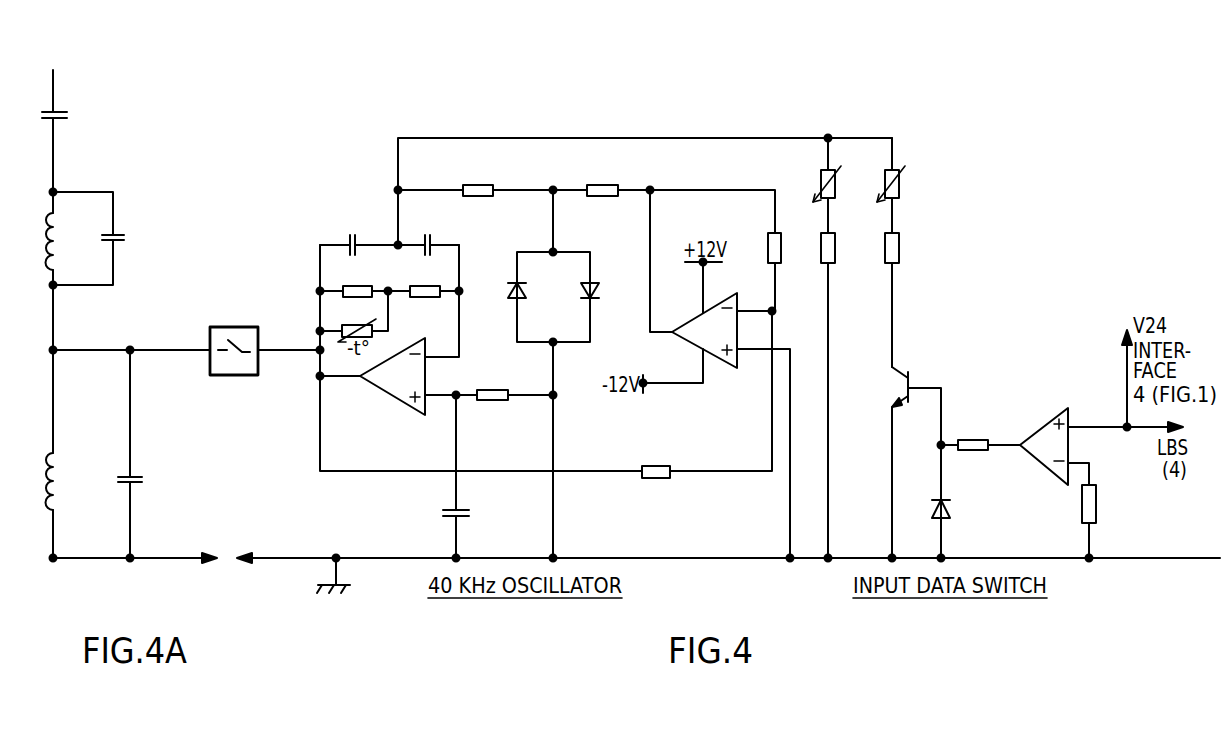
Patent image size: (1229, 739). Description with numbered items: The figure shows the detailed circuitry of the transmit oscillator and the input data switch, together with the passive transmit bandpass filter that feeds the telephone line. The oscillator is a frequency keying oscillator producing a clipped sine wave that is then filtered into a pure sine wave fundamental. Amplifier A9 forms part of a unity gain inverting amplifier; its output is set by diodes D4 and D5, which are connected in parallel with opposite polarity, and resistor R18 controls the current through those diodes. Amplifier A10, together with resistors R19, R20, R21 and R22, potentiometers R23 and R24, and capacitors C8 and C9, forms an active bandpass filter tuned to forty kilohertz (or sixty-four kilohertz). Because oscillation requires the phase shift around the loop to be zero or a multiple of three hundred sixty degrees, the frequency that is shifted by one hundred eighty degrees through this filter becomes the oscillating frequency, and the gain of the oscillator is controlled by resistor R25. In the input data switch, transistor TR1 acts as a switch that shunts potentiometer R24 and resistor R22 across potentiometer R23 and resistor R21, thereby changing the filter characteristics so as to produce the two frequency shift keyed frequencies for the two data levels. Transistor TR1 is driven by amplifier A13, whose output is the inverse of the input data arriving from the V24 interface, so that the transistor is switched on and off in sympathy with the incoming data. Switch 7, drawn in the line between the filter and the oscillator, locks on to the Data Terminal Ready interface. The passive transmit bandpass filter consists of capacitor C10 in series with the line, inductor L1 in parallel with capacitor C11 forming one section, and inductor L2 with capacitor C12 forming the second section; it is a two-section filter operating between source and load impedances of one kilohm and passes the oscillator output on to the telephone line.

In FIG. 4A, the capacitor C10 is at (67, 104).
In FIG. 4A, the inductor L1 is at (65, 240).
In FIG. 4A, the capacitor C11 is at (88, 238).
In FIG. 4A, the inductor L2 is at (65, 481).
In FIG. 4A, the capacitor C12 is at (120, 454).
In FIG. 4, the switch 7 is at (233, 375).
In FIG. 4, the capacitor C8 is at (359, 232).
In FIG. 4, the capacitor C9 is at (428, 232).
In FIG. 4, the resistor R19 is at (356, 279).
In FIG. 4, the resistor R20 is at (423, 279).
In FIG. 4, the resistor R25 is at (475, 177).
In FIG. 4, the resistor R18 is at (601, 178).
In FIG. 4, the diode D4 is at (530, 295).
In FIG. 4, the diode D5 is at (603, 295).
In FIG. 4, the amplifier A10 is at (372, 376).
In FIG. 4, the amplifier A9 is at (693, 279).
In FIG. 4, the potentiometer R23 is at (845, 179).
In FIG. 4, the potentiometer R24 is at (909, 184).
In FIG. 4, the resistor R21 is at (843, 248).
In FIG. 4, the resistor R22 is at (907, 248).
In FIG. 4, the transistor TR1 is at (917, 458).
In FIG. 4, the amplifier A13 is at (1044, 446).